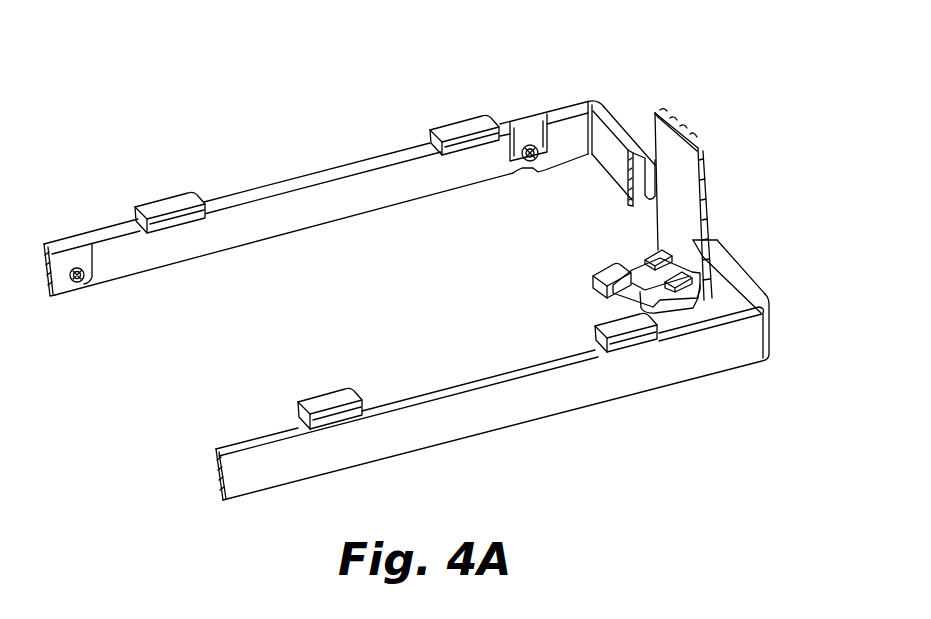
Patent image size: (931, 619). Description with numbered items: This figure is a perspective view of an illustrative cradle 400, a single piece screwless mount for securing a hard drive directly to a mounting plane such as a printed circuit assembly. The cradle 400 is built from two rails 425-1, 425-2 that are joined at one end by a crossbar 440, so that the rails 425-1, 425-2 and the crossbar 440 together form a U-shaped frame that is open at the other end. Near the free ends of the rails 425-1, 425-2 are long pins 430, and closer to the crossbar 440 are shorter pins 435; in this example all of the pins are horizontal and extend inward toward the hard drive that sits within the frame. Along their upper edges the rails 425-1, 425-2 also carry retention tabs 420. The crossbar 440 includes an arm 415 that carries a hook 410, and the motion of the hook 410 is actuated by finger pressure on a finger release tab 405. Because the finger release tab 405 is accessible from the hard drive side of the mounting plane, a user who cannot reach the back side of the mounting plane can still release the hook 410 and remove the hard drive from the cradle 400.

The cradle 400 is at (128, 69).
The finger release tab 405 is at (662, 150).
The hook 410 is at (593, 268).
The arm 415 is at (638, 252).
The retention tab 420 is at (337, 387).
The rail 425-1 is at (530, 408).
The rail 425-2 is at (304, 173).
The long pin 430 is at (88, 296).
The short pin 435 is at (531, 146).
The crossbar 440 is at (747, 280).